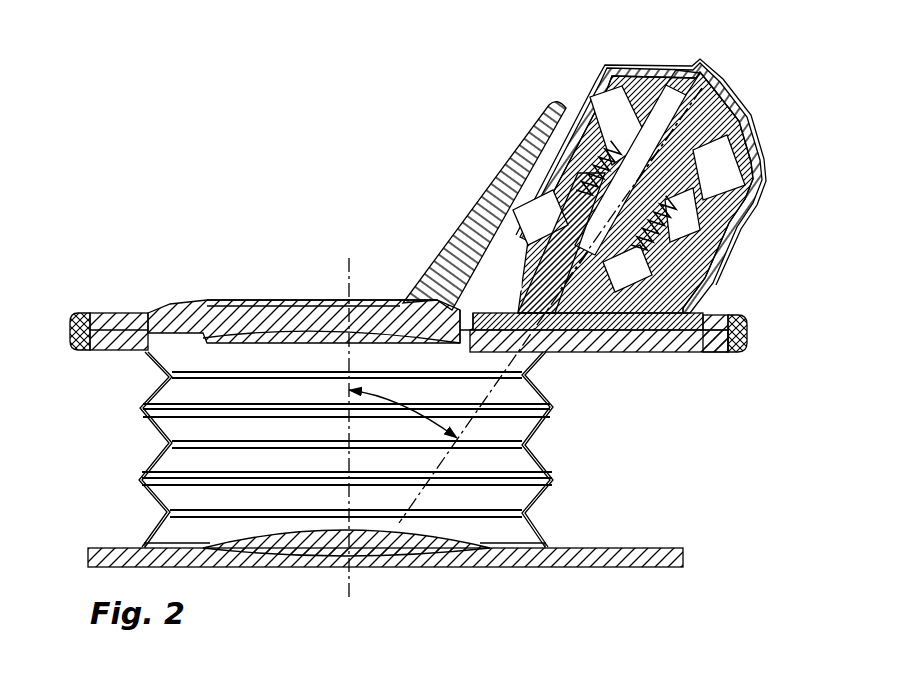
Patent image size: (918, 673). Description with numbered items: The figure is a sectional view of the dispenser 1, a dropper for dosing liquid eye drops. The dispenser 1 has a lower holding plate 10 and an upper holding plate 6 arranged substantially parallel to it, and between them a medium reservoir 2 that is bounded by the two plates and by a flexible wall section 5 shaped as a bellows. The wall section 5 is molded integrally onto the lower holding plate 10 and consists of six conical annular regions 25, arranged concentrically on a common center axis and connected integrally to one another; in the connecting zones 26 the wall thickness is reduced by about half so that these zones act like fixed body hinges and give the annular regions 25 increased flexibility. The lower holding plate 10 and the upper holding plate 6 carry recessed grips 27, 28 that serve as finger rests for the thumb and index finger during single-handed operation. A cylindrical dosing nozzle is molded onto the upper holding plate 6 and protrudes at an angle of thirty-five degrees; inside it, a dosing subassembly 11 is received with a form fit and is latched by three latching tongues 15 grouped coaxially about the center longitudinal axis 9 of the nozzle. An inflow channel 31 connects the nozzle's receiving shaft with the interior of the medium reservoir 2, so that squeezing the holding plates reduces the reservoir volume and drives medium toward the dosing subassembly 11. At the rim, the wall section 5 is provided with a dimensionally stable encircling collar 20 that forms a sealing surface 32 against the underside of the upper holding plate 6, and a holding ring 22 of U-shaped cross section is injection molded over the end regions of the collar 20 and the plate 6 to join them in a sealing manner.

The dispenser 1 is at (378, 182).
The medium reservoir 2 is at (612, 446).
The wall section 5 is at (118, 388).
The upper holding plate 6 is at (170, 318).
The center longitudinal axis 9 is at (620, 195).
The lower holding plate 10 is at (607, 568).
The dosing subassembly 11 is at (762, 144).
The latching tongues 15 is at (535, 247).
The encircling collar 20 is at (640, 354).
The holding ring 22 is at (750, 334).
The annular regions 25 is at (150, 437).
The connecting zones 26 is at (556, 517).
The recessed grip 27 is at (323, 576).
The recessed grip 28 is at (308, 292).
The inflow channel 31 is at (448, 326).
The sealing surface 32 is at (142, 325).